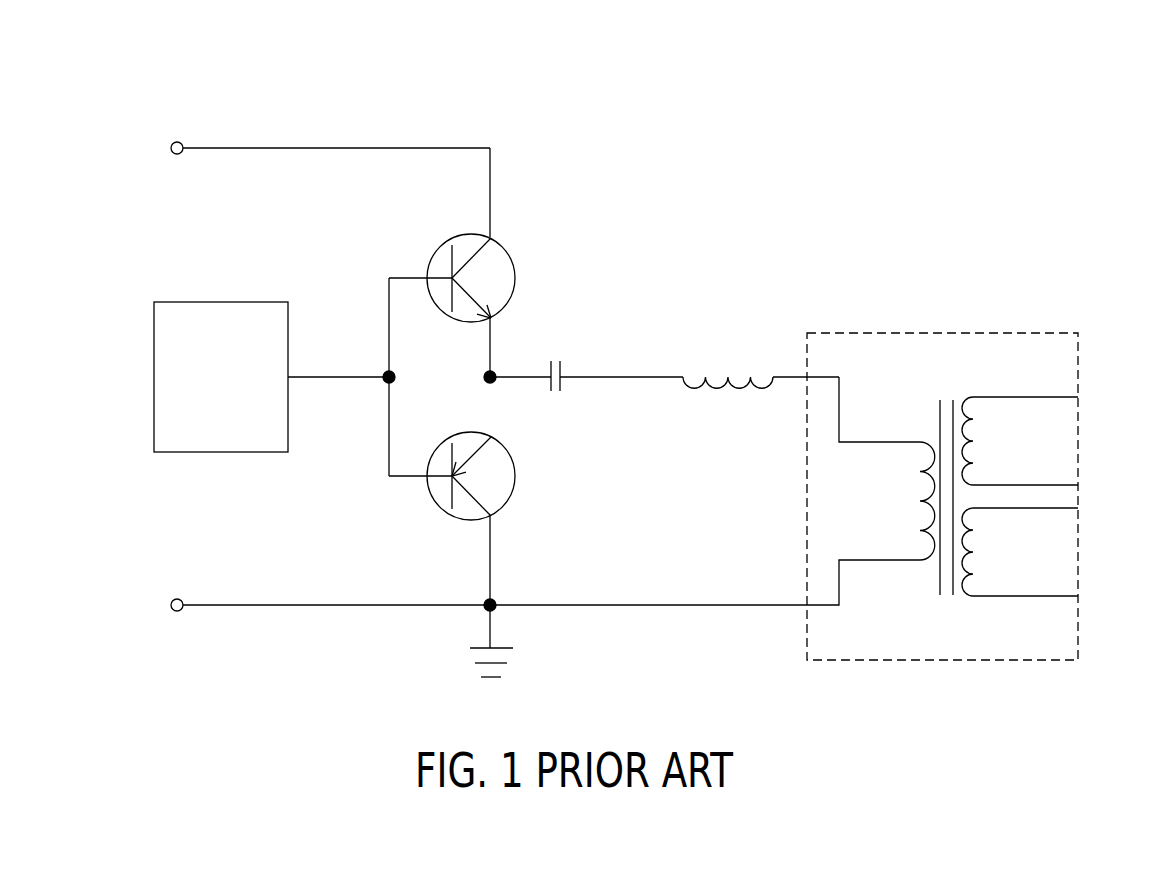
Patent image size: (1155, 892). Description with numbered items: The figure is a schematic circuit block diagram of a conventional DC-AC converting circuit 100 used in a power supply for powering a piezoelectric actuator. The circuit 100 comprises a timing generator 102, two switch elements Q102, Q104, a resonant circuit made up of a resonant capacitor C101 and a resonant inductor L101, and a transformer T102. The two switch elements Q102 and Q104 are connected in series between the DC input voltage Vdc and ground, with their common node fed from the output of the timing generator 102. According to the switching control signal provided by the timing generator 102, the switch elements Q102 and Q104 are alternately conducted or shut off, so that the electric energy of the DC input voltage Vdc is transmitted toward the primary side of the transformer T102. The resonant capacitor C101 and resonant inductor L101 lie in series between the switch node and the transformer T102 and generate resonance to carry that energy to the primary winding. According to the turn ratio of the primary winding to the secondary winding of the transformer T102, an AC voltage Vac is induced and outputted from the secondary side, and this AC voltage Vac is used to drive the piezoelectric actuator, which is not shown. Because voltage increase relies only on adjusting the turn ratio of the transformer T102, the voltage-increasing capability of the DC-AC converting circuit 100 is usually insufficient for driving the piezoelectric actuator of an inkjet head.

The DC-AC converting circuit 100 is at (1078, 151).
The timing generator 102 is at (154, 374).
The switch element Q102 is at (514, 228).
The switch element Q104 is at (516, 518).
The resonant capacitor C101 is at (586, 400).
The resonant inductor L101 is at (761, 408).
The transformer T102 is at (942, 496).
The DC input voltage Vdc is at (301, 141).
The AC voltage Vac is at (1122, 496).